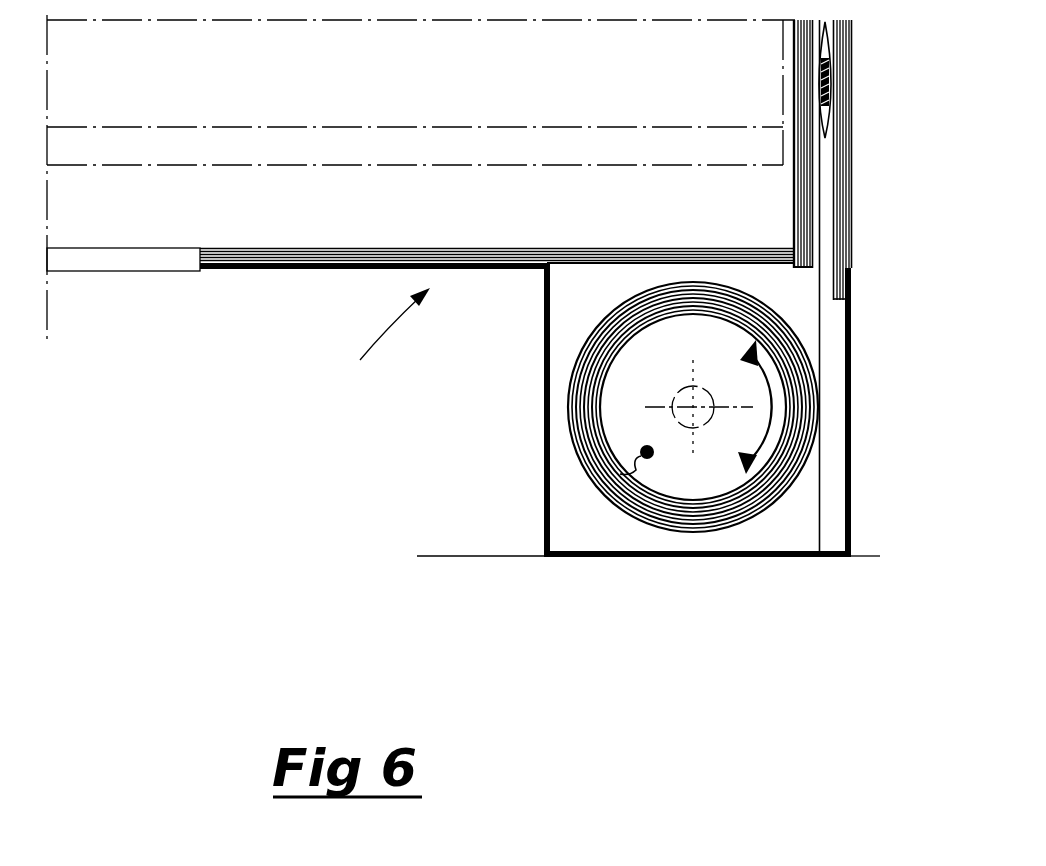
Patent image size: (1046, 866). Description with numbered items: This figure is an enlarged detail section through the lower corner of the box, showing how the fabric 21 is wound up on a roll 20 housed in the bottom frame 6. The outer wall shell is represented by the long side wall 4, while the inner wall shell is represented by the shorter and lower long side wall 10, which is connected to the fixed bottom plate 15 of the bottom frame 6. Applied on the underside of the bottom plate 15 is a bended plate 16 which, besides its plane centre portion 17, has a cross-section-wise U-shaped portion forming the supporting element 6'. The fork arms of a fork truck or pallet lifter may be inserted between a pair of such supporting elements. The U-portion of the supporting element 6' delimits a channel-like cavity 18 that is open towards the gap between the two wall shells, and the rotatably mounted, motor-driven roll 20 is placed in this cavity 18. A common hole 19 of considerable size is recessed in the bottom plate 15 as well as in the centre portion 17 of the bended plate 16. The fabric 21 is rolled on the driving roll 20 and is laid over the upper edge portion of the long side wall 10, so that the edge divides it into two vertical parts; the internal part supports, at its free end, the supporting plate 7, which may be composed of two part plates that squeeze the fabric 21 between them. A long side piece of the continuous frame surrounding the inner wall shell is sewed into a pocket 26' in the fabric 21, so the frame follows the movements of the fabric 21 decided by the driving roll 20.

The long side wall 4 is at (845, 180).
The bottom frame 6 is at (380, 346).
The supporting element 6' is at (511, 487).
The supporting plate 7 is at (440, 126).
The long side wall 10 is at (801, 183).
The bottom plate 15 is at (393, 248).
The bended plate 16 is at (545, 322).
The centre portion 17 is at (312, 272).
The cavity 18 is at (601, 533).
The common hole 19 is at (118, 262).
The roll 20 is at (733, 468).
The fabric 21 is at (820, 322).
The pocket 26' is at (881, 80).